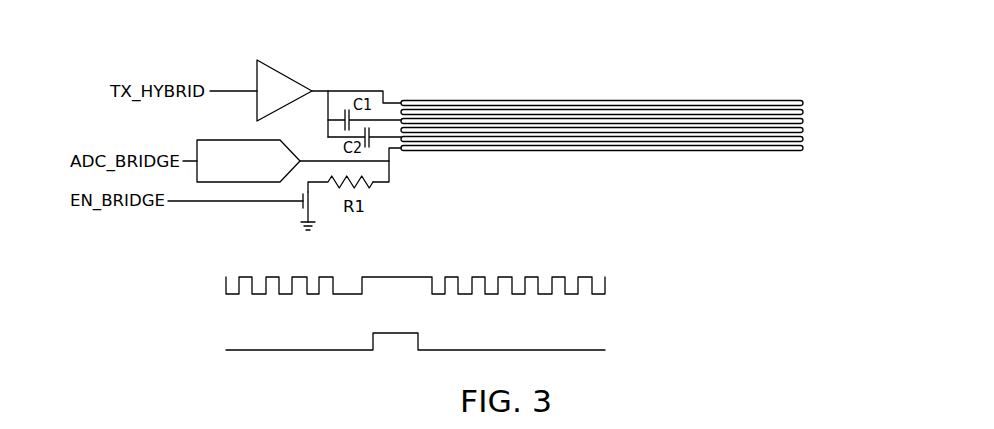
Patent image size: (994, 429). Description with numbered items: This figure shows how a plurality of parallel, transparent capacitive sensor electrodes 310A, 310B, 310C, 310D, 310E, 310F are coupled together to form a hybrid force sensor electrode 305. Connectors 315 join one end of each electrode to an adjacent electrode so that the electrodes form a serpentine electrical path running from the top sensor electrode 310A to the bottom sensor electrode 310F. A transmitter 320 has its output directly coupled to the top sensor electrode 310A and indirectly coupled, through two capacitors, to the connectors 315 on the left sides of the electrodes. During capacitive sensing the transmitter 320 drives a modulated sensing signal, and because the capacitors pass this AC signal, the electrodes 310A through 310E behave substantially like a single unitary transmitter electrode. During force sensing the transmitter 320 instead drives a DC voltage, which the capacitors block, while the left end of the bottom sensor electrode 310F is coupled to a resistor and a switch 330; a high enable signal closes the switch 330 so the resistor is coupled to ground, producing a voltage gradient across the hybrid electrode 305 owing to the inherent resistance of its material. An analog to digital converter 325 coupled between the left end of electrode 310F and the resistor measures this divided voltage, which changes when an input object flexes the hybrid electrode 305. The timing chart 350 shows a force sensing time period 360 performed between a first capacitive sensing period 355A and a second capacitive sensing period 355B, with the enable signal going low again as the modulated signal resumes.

The hybrid force sensor electrode 305 is at (630, 120).
The top sensor electrode 310A is at (786, 100).
The sensor electrode 310B is at (806, 111).
The sensor electrode 310C is at (806, 121).
The sensor electrode 310D is at (806, 130).
The sensor electrode 310E is at (806, 139).
The bottom sensor electrode 310F is at (779, 151).
The connectors 315 is at (401, 131).
The transmitter 320 is at (275, 70).
The analog to digital converter 325 is at (224, 140).
The switch 330 is at (320, 206).
The timing chart 350 is at (379, 297).
The first capacitive sensing period 355A is at (362, 301).
The second capacitive sensing period 355B is at (605, 301).
The force sensing time period 360 is at (418, 327).